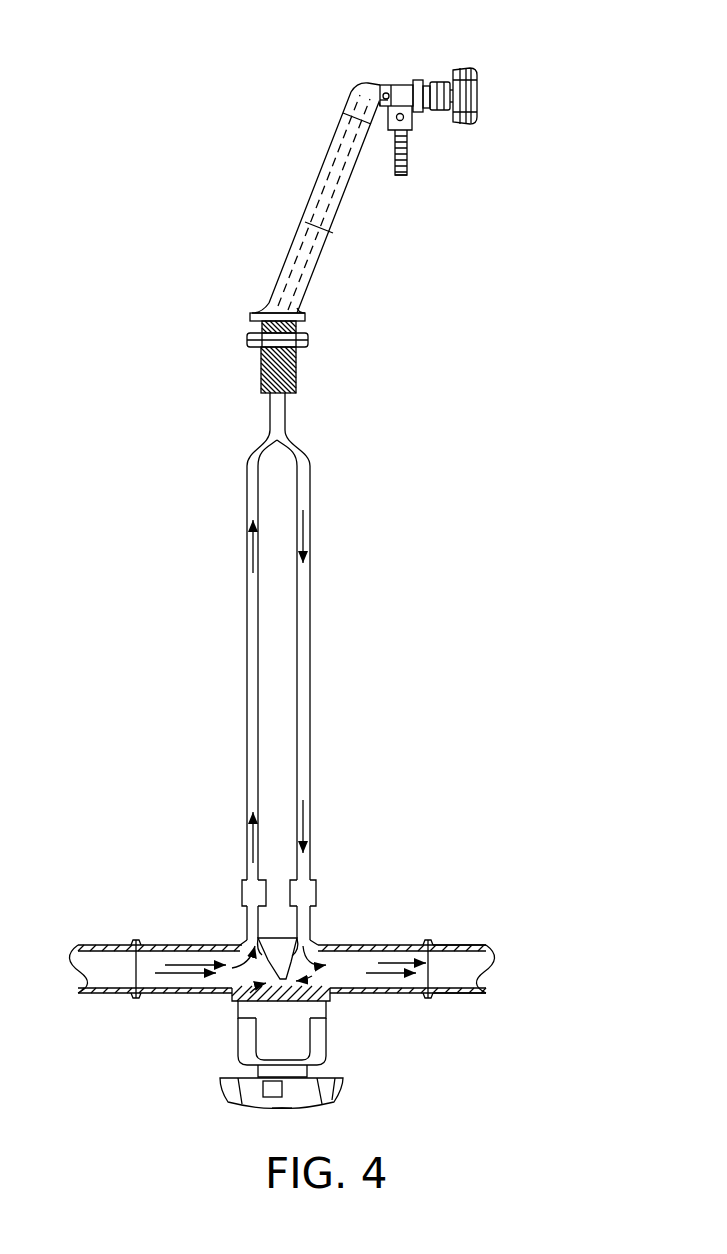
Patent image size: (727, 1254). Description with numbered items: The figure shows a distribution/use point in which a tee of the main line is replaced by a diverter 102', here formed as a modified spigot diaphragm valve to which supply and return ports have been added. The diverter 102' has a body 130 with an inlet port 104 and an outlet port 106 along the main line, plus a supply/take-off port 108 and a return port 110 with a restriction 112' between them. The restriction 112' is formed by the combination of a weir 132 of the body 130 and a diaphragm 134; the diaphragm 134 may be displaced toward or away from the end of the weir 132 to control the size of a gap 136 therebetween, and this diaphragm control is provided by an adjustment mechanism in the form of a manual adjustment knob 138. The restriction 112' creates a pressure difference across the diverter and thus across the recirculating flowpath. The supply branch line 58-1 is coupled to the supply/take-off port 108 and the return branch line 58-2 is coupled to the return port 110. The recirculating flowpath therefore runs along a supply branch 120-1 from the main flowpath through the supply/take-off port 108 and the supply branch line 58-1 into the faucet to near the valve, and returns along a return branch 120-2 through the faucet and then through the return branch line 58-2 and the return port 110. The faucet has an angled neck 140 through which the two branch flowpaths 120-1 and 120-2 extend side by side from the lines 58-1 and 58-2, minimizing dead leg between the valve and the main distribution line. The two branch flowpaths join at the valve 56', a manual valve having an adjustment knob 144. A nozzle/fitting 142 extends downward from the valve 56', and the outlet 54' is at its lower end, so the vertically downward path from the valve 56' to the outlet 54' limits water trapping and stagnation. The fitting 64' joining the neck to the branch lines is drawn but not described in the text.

The valve 56' is at (405, 70).
The adjustment knob 144 is at (495, 92).
The nozzle/fitting 142 is at (408, 148).
The outlet 54' is at (434, 193).
The angled neck 140 is at (318, 243).
The fitting 64' is at (316, 353).
The supply branch 120-1 is at (221, 592).
The return branch 120-2 is at (334, 592).
The supply branch line 58-1 is at (256, 770).
The return branch line 58-2 is at (299, 770).
The supply/take-off port 108 is at (243, 893).
The return port 110 is at (315, 893).
The weir 132 is at (310, 944).
The diverter 102' is at (281, 918).
The inlet port 104 is at (129, 976).
The outlet port 106 is at (439, 978).
The body 130 is at (386, 993).
The restriction 112' is at (309, 1004).
The gap 136 is at (242, 998).
The diaphragm 134 is at (244, 1006).
The manual adjustment knob 138 is at (349, 1088).